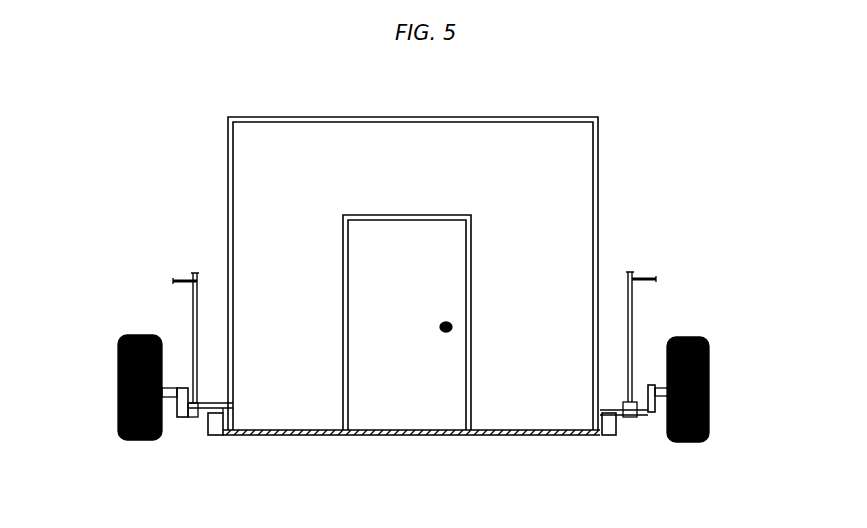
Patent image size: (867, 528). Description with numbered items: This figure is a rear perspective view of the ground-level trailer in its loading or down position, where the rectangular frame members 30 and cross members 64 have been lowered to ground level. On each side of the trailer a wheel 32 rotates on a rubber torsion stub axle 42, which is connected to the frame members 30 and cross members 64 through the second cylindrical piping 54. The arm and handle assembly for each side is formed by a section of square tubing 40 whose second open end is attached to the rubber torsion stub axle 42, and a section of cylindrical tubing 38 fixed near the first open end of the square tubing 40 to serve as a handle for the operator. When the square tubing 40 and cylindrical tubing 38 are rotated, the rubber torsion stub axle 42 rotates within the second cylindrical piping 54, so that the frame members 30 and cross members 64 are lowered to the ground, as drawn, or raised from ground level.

The frame members 30 is at (227, 430).
The wheels 32 is at (118, 406).
The cylindrical tubing 38 is at (187, 281).
The square tubing 40 is at (193, 320).
The rubber torsion stub axle 42 is at (168, 406).
The second cylindrical piping 54 is at (217, 405).
The cross members 64 is at (512, 435).